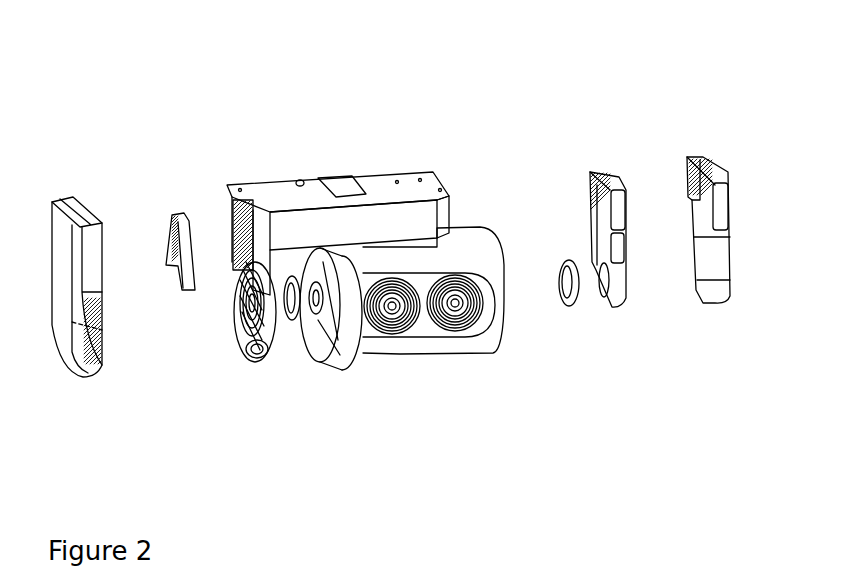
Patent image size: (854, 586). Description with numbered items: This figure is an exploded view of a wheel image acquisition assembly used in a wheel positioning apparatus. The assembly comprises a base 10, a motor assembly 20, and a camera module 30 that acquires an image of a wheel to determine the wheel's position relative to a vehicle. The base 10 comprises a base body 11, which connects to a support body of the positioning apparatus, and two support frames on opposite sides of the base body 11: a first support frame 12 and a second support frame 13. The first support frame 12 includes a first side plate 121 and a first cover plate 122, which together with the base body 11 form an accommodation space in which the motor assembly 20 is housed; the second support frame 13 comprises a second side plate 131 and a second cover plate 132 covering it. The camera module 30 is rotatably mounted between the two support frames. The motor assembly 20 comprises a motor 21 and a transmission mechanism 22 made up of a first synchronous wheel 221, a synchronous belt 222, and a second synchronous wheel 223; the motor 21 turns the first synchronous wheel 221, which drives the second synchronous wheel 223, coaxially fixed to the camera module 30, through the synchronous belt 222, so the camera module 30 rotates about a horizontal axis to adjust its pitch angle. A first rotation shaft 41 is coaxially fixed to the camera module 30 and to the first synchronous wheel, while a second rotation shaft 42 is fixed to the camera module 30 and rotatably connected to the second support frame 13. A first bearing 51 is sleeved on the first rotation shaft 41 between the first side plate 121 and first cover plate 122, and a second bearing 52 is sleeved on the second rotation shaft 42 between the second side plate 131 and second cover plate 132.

The base 10 is at (242, 50).
The base body 11 is at (328, 222).
The first support frame 12 is at (155, 102).
The first side plate 121 is at (265, 222).
The first cover plate 122 is at (83, 222).
The second support frame 13 is at (683, 102).
The second side plate 131 is at (604, 200).
The second cover plate 132 is at (688, 157).
The motor assembly 20 is at (92, 457).
The motor 21 is at (168, 240).
The transmission mechanism 22 is at (122, 410).
The first synchronous wheel 221 is at (243, 228).
The synchronous belt 222 is at (232, 272).
The second synchronous wheel 223 is at (245, 344).
The camera module 30 is at (437, 327).
The first rotation shaft 41 is at (320, 308).
The second rotation shaft 42 is at (510, 290).
The first bearing 51 is at (300, 322).
The second bearing 52 is at (578, 307).